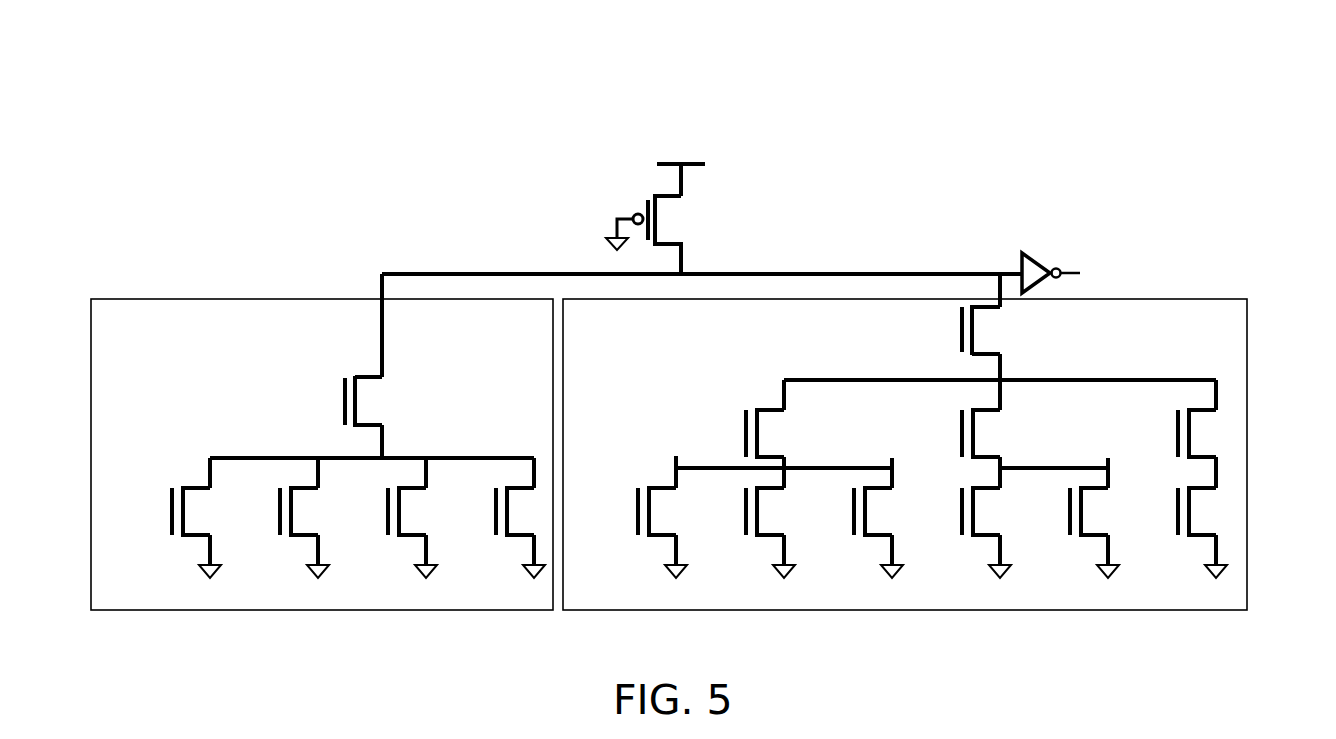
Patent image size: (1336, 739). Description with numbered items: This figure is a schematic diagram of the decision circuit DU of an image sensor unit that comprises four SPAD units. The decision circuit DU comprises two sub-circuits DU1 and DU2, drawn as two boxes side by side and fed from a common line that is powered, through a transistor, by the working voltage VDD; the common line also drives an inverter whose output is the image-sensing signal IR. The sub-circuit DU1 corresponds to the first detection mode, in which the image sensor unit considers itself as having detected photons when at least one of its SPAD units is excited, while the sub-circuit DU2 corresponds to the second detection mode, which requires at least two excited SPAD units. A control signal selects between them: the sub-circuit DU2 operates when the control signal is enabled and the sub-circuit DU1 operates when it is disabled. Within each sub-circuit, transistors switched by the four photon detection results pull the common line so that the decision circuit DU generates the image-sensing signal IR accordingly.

The decision circuit DU is at (420, 64).
The sub-circuit DU1 is at (91, 498).
The sub-circuit DU2 is at (1247, 498).
The working voltage VDD is at (656, 206).
The image-sensing signal IR is at (1067, 273).